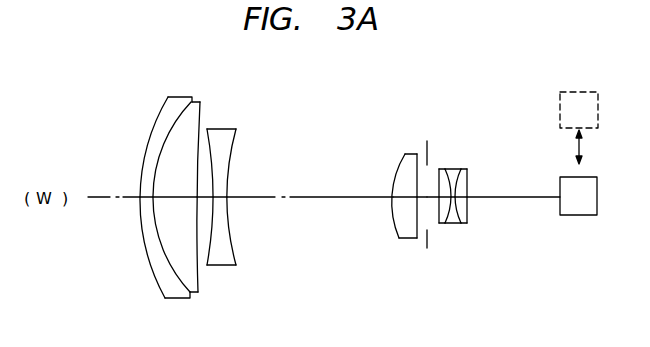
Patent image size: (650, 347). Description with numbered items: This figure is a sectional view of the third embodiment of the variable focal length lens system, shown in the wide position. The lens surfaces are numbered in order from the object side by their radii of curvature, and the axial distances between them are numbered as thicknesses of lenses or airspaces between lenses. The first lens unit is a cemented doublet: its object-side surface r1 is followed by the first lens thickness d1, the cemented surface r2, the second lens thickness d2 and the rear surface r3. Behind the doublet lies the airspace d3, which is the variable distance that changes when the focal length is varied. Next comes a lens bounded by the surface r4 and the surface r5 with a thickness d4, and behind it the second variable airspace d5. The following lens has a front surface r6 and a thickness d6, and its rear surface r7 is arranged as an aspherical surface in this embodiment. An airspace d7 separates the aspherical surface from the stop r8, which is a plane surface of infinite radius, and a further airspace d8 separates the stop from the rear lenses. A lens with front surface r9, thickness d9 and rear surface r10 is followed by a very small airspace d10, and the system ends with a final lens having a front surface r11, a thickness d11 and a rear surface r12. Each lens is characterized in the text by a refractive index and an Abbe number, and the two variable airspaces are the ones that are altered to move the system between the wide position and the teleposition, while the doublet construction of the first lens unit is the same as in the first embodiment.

The lens thickness d1 is at (142, 196).
The lens thickness d2 is at (173, 195).
The airspace d3 is at (203, 199).
The lens thickness d4 is at (218, 196).
The airspace d5 is at (301, 196).
The lens thickness d6 is at (393, 195).
The airspace d7 is at (420, 196).
The airspace d8 is at (433, 196).
The lens thickness d9 is at (446, 196).
The airspace d10 is at (454, 196).
The lens thickness d11 is at (461, 196).
The lens surface r1 is at (155, 280).
The lens surface r2 is at (177, 280).
The lens surface r3 is at (202, 280).
The lens surface r4 is at (215, 264).
The lens surface r5 is at (236, 250).
The lens surface r6 is at (399, 238).
The aspherical surface r7 is at (418, 240).
The stop r8 is at (428, 249).
The lens surface r9 is at (441, 224).
The lens surface r10 is at (451, 224).
The lens surface r11 is at (461, 224).
The lens surface r12 is at (469, 222).